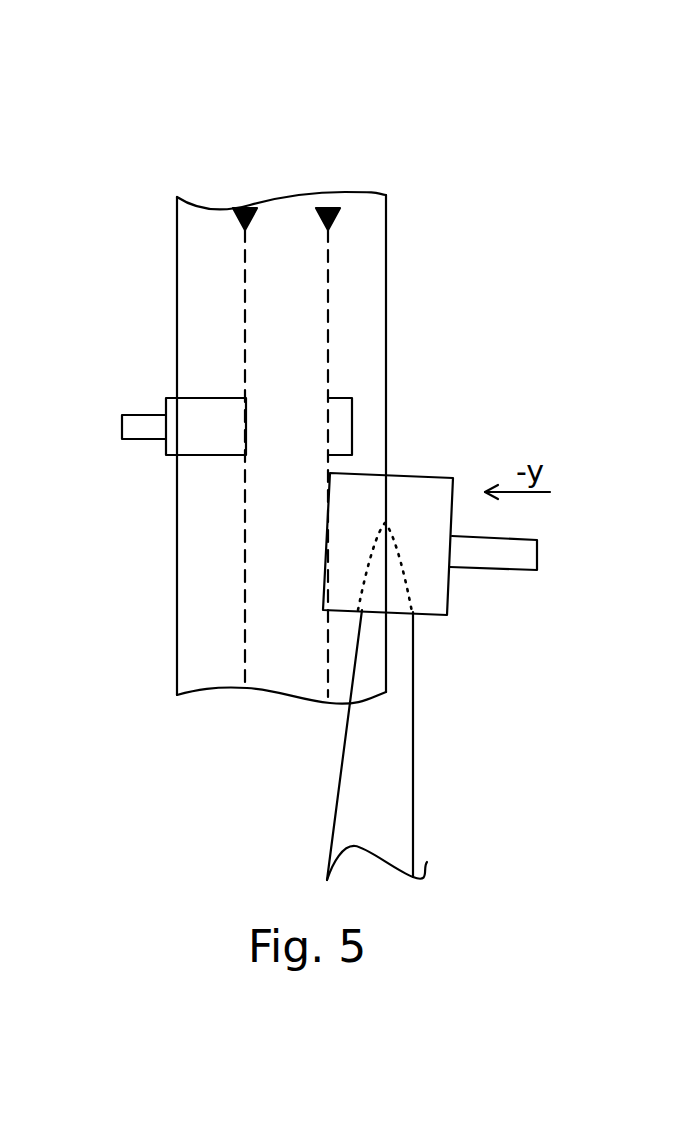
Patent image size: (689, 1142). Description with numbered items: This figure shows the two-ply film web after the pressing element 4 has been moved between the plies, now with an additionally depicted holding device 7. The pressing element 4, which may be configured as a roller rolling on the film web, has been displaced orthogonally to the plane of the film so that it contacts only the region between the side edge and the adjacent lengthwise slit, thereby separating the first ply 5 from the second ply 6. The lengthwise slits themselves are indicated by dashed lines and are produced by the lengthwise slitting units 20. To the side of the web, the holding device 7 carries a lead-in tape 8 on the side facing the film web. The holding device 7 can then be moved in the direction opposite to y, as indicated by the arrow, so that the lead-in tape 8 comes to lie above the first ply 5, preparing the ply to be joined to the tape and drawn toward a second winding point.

The pressing element 4 is at (190, 460).
The first ply 5 is at (287, 680).
The second ply 6 is at (368, 337).
The holding device 7 is at (423, 492).
The lead-in tape 8 is at (388, 678).
The lengthwise slitting unit 20 is at (245, 207).